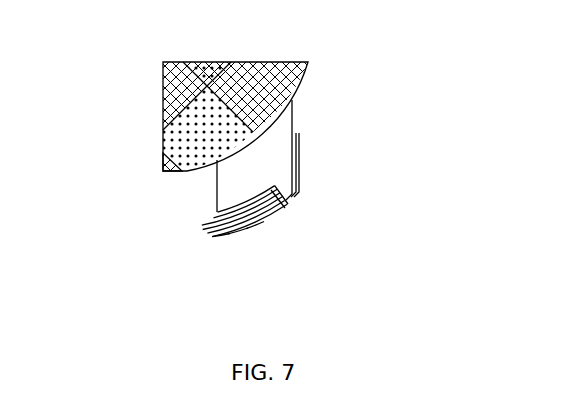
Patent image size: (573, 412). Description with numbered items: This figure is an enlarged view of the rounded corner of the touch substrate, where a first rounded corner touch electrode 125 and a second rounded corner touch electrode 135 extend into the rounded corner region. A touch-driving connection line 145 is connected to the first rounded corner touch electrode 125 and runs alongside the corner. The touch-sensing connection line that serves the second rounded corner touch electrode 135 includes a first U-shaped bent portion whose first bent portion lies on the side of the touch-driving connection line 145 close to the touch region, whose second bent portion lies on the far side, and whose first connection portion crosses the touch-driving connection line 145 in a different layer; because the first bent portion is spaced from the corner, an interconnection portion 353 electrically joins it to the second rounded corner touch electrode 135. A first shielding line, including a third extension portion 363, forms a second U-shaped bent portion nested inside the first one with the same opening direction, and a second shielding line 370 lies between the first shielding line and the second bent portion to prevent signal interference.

The first rounded corner touch electrode 125 is at (253, 63).
The second rounded corner touch electrode 135 is at (165, 173).
The touch-driving connection line 145 is at (292, 123).
The third extension portion 363 is at (299, 147).
The second shielding line 370 is at (299, 171).
The interconnection portion 353 is at (216, 186).